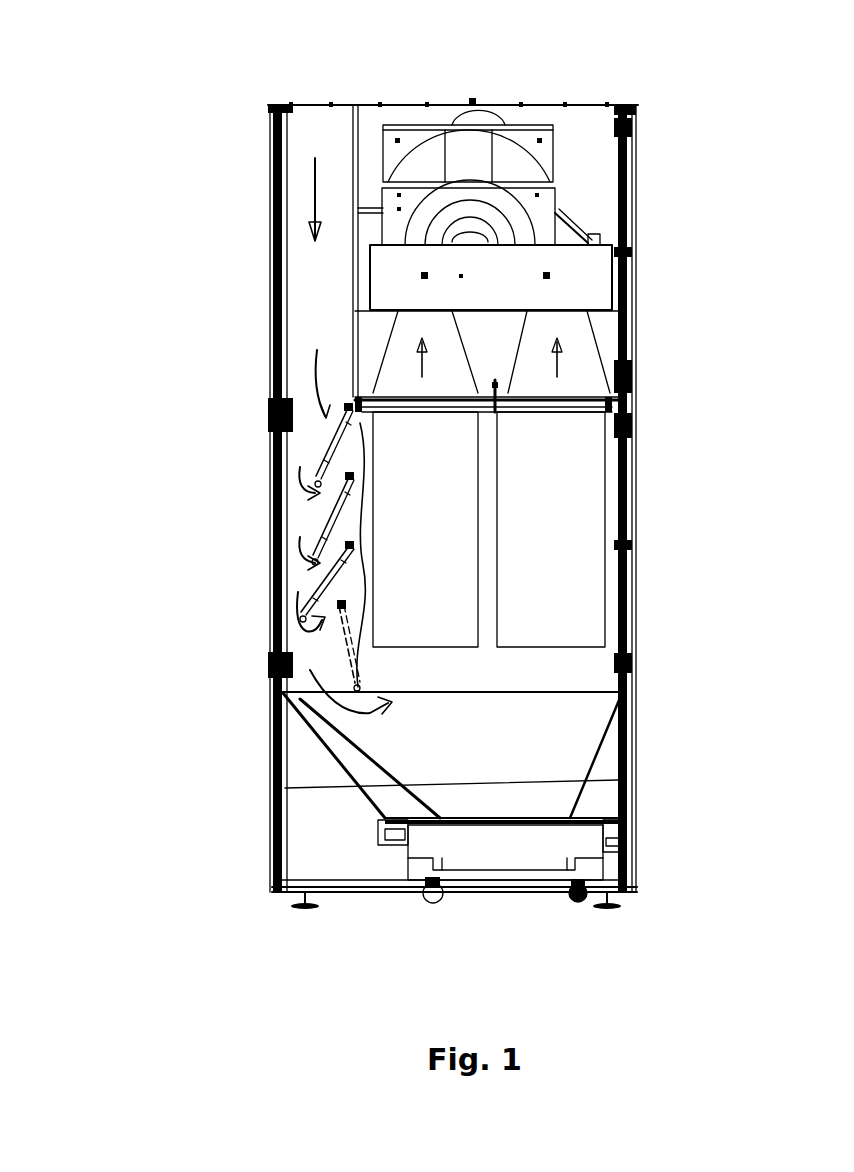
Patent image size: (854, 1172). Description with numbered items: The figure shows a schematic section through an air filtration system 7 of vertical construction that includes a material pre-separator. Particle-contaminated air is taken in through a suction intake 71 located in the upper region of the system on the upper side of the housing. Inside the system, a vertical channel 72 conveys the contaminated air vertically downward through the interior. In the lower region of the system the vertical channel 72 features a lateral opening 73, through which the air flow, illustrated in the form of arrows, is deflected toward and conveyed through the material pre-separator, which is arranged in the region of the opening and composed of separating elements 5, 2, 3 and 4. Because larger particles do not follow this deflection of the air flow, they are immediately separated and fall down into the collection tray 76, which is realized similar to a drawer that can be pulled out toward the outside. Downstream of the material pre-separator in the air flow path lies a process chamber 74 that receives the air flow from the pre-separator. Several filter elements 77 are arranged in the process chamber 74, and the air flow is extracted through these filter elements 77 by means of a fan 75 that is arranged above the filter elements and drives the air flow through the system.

The air filtration system 7 is at (126, 190).
The suction intake 71 is at (313, 117).
The vertical channel 72 is at (315, 312).
The fan 75 is at (557, 190).
The filter elements 77 is at (450, 545).
The process chamber 74 is at (506, 683).
The lateral opening 73 is at (362, 530).
The separating element 5 is at (317, 433).
The separating element 2 is at (320, 515).
The separating element 3 is at (317, 573).
The separating element 4 is at (343, 647).
The collection tray 76 is at (332, 762).